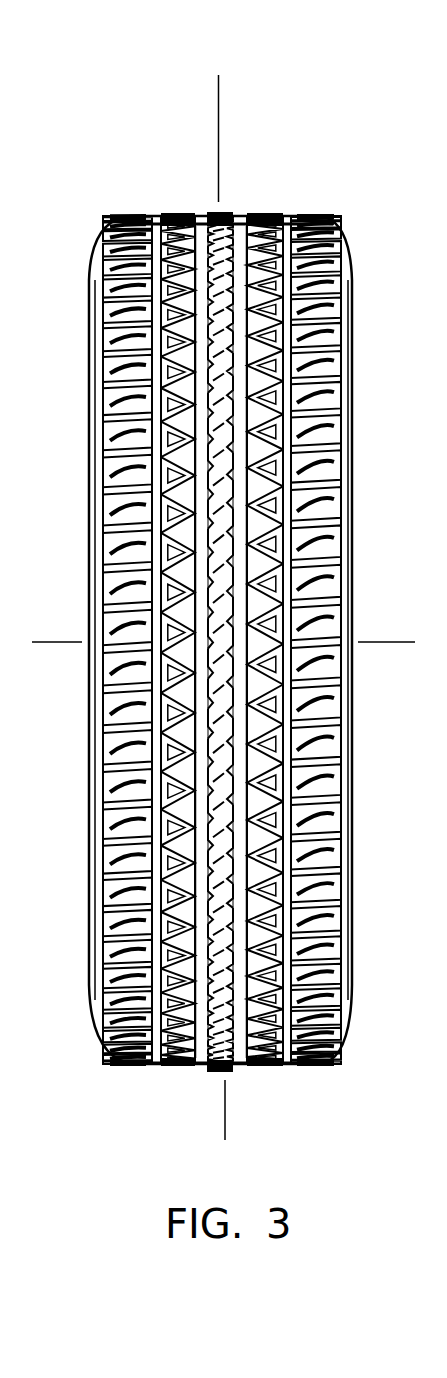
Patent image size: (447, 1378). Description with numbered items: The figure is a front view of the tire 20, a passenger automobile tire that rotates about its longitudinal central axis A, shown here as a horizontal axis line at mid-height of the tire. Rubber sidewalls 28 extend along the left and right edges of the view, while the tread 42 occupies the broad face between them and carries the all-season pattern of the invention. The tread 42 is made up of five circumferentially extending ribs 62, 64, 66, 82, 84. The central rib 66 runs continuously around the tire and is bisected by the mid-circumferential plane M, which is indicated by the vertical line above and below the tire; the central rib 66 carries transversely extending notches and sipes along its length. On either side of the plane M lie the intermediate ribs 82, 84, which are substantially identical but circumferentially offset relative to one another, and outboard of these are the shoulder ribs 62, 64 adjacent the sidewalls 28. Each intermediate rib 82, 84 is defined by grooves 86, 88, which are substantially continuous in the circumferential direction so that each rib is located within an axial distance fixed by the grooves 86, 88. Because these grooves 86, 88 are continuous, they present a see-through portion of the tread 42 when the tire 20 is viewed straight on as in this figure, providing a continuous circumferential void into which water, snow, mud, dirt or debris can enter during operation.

The tire 20 is at (303, 77).
The sidewalls 28 is at (90, 592).
The tread 42 is at (273, 200).
The rib 62 is at (130, 217).
The rib 64 is at (307, 215).
The central rib 66 is at (207, 213).
The left intermediate rib 82 is at (155, 213).
The right intermediate rib 84 is at (252, 213).
The groove 86 is at (132, 213).
The groove 88 is at (170, 213).
The longitudinal central axis A is at (358, 642).
The mid-circumferential plane M is at (219, 150).